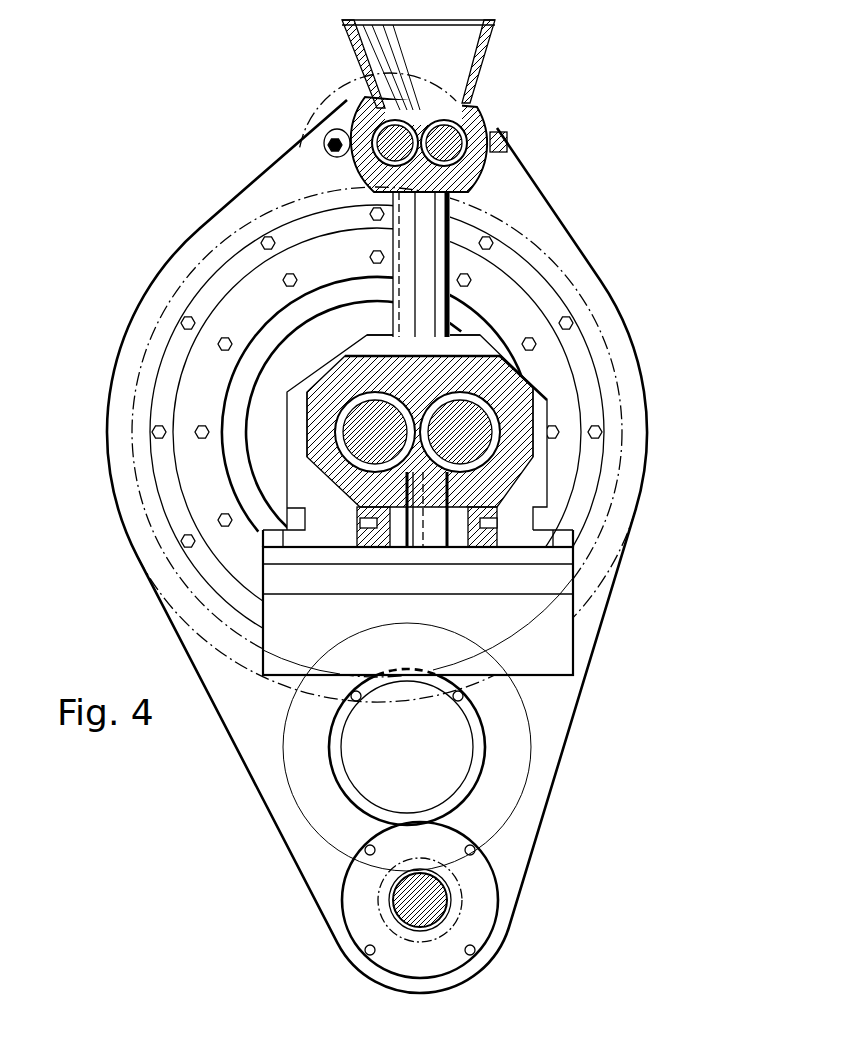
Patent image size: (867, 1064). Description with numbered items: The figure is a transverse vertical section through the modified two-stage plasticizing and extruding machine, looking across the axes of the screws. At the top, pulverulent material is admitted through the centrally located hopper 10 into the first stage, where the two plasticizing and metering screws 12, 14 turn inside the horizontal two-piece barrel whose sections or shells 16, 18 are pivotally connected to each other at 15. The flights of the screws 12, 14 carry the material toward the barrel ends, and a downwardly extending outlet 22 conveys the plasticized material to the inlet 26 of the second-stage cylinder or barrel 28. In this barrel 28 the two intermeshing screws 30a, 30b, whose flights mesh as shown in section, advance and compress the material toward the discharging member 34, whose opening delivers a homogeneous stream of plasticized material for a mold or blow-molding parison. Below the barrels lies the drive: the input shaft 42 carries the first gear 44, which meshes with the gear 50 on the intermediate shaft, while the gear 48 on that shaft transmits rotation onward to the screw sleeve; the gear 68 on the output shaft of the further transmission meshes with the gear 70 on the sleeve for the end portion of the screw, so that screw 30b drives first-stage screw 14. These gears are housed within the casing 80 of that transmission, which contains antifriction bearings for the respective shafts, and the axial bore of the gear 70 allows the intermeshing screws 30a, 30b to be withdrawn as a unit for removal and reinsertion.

The hopper 10 is at (487, 52).
The plasticizing and metering screw 12 is at (483, 122).
The plasticizing and metering screw 14 is at (362, 166).
The pivotal connection 15 is at (324, 148).
The barrel section 16 is at (505, 152).
The barrel section 18 is at (358, 118).
The outlet 22 is at (455, 200).
The inlet 26 is at (372, 397).
The cylinder or barrel 28 is at (507, 470).
The screw 30a is at (475, 418).
The screw 30b is at (360, 423).
The discharging member 34 is at (435, 545).
The input shaft 42 is at (433, 897).
The first gear 44 is at (378, 912).
The gear 48 is at (330, 760).
The gear 50 is at (530, 772).
The gear 68 is at (345, 135).
The gear 70 is at (590, 628).
The casing 80 is at (565, 712).